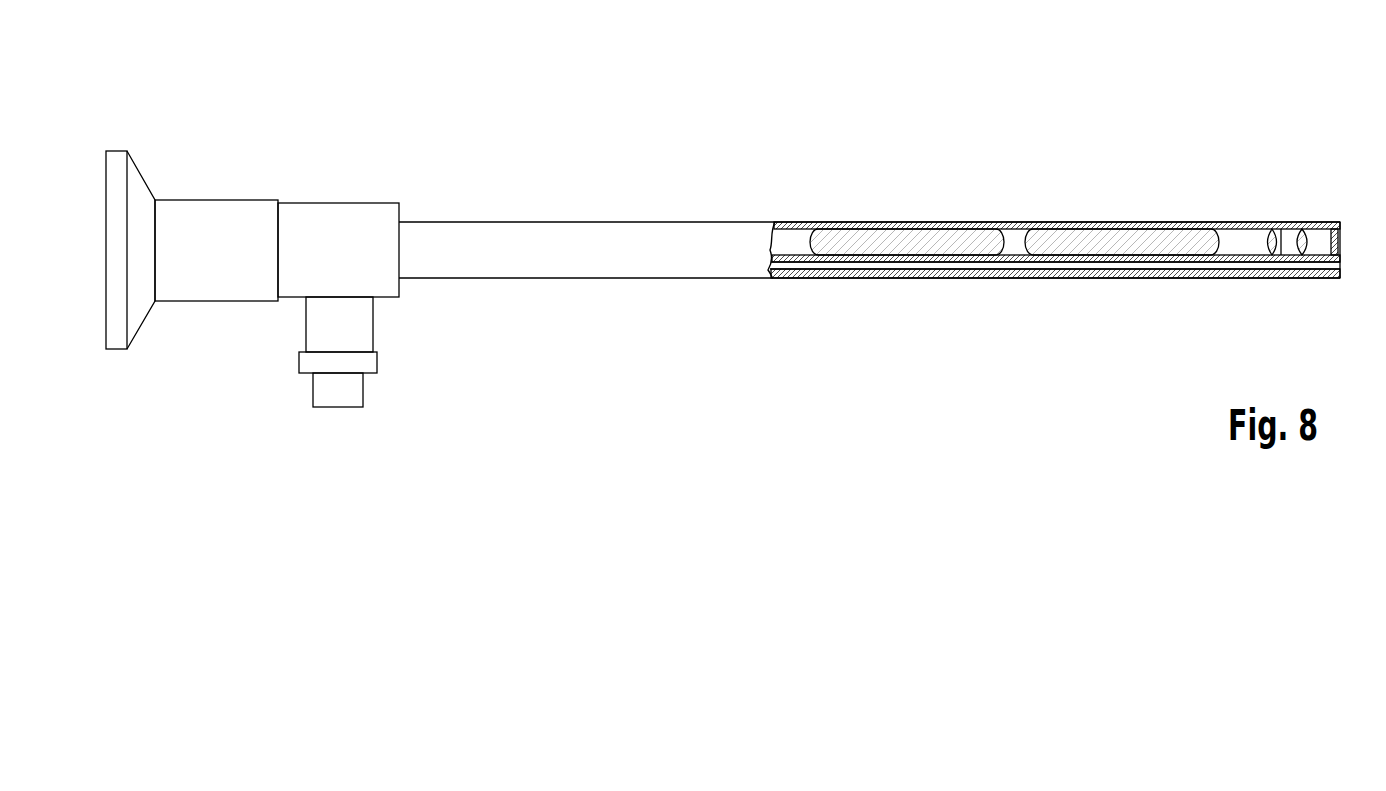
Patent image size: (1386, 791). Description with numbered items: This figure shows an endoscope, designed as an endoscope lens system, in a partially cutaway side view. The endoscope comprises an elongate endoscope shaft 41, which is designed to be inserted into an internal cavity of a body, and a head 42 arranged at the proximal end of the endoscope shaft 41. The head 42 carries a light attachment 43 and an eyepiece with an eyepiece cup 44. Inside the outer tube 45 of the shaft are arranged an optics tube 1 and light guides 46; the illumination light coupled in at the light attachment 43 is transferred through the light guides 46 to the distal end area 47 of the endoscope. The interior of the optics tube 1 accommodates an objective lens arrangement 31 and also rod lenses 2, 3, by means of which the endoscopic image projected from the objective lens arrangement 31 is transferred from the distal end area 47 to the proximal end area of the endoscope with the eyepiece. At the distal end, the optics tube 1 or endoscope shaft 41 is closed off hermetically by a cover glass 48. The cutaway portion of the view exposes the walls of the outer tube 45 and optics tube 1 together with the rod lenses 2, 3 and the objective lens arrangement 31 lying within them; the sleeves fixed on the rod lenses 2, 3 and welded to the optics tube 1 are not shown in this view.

The optics tube 1 is at (1012, 258).
The rod lens 2 is at (1140, 240).
The rod lens 3 is at (912, 235).
The objective lens arrangement 31 is at (1300, 200).
The endoscope shaft 41 is at (713, 135).
The head 42 is at (305, 135).
The light attachment 43 is at (395, 410).
The eyepiece cup 44 is at (112, 158).
The outer tube 45 is at (1206, 272).
The light guides 46 is at (1120, 265).
The distal end area 47 is at (1201, 135).
The cover glass 48 is at (1340, 243).